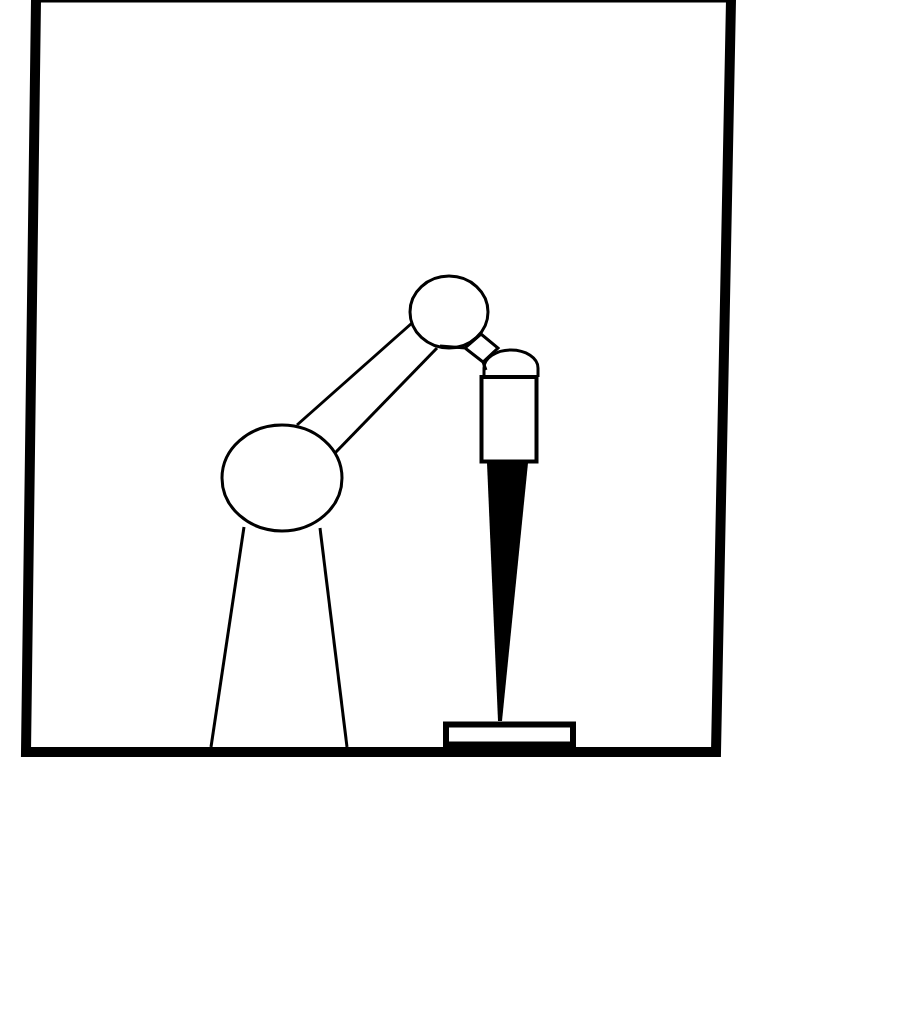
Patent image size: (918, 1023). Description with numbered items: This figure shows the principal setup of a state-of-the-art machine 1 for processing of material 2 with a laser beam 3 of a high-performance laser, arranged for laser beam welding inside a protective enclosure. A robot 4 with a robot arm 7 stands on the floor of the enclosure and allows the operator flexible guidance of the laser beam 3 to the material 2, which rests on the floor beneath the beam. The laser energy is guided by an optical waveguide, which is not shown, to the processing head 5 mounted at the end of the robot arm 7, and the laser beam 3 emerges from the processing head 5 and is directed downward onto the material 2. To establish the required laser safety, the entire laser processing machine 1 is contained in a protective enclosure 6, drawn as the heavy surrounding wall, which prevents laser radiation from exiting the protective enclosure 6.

The machine 1 is at (253, 167).
The material 2 is at (533, 735).
The laser beam 3 is at (517, 535).
The robot 4 is at (262, 594).
The processing head 5 is at (503, 418).
The protective enclosure 6 is at (731, 261).
The robot arm 7 is at (365, 400).